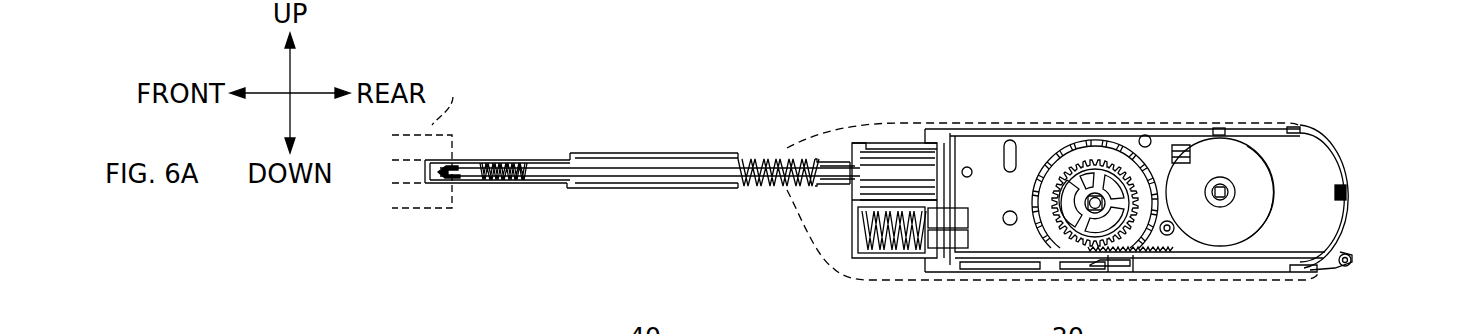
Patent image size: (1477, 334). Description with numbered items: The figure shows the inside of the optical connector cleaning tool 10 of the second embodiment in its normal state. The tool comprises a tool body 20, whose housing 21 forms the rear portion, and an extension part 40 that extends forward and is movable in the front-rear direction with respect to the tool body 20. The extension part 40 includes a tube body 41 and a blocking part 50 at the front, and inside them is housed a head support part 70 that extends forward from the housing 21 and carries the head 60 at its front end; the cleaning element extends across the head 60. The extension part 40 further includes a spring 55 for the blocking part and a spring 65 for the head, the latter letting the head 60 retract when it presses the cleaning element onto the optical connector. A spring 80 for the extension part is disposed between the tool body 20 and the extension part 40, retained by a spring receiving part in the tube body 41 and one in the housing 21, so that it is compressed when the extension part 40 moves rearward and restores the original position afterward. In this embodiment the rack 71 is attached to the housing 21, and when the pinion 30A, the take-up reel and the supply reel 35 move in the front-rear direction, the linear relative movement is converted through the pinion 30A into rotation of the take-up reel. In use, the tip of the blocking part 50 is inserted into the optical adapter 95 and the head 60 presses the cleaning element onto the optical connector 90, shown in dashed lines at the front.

The optical connector cleaning tool 10 is at (1387, 125).
The tool body 20 is at (1066, 106).
The housing 21 is at (1337, 150).
The pinion 30A is at (1132, 182).
The supply reel 35 is at (1220, 150).
The extension part 40 is at (642, 140).
The tube body 41 is at (712, 153).
The blocking part 50 is at (540, 160).
The spring for the blocking part 55 is at (762, 188).
The head 60 is at (441, 178).
The spring for the head 65 is at (503, 181).
The head support part 70 is at (612, 177).
The rack 71 is at (1145, 253).
The spring for the extension part 80 is at (895, 252).
The optical connector 90 is at (410, 185).
The optical adapter 95 is at (451, 96).